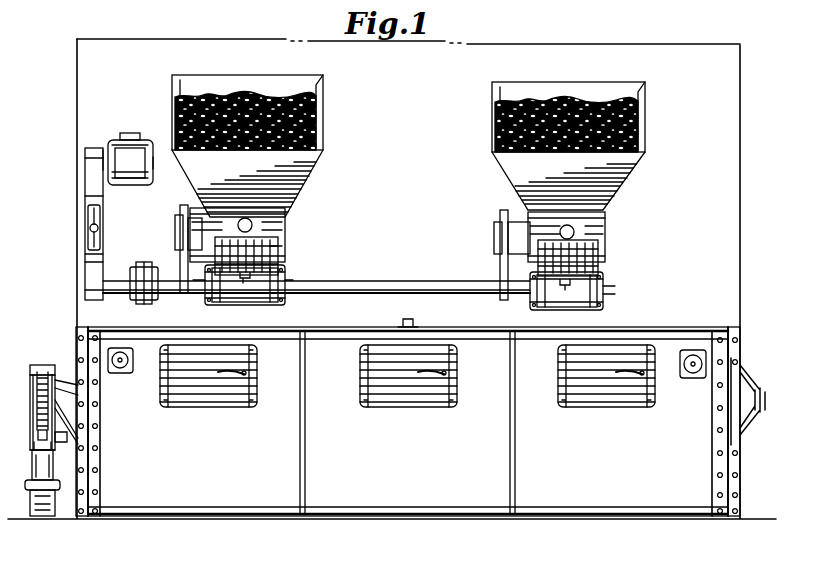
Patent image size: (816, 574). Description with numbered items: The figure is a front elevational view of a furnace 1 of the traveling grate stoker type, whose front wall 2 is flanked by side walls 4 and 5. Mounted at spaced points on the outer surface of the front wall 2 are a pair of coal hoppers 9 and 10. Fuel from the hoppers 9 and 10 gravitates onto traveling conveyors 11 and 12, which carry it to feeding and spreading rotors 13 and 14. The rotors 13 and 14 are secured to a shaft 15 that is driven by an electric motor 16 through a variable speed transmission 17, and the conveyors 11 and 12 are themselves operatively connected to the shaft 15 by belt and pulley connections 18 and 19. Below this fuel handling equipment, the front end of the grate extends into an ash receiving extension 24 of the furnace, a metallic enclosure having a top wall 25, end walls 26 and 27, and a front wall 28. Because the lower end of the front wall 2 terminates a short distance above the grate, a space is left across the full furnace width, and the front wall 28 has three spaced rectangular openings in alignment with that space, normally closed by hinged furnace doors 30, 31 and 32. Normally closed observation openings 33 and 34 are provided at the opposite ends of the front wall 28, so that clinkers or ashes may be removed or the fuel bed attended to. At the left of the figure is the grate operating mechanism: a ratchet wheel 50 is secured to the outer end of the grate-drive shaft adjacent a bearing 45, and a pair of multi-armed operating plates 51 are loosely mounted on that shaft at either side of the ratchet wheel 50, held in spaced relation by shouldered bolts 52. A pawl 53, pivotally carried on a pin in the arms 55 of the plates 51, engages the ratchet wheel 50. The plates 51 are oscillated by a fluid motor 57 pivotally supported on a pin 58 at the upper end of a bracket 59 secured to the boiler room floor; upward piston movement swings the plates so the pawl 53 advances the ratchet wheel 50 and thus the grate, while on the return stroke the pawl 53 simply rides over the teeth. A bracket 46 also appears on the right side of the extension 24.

The furnace 1 is at (77, 54).
The front wall 2 is at (379, 182).
The side wall 4 is at (85, 268).
The side wall 5 is at (742, 207).
The coal hopper 9 is at (320, 128).
The coal hopper 10 is at (642, 134).
The traveling conveyor 11 is at (287, 240).
The traveling conveyor 12 is at (607, 236).
The feeding and spreading rotor 13 is at (246, 296).
The feeding and spreading rotor 14 is at (551, 305).
The shaft 15 is at (349, 283).
The electric motor 16 is at (113, 140).
The variable speed transmission 17 is at (101, 226).
The belt and pulley connection 18 is at (180, 247).
The belt and pulley connection 19 is at (500, 256).
The ash receiving extension 24 is at (735, 467).
The top wall 25 is at (650, 330).
The end wall 26 is at (78, 337).
The end wall 27 is at (738, 350).
The front wall 28 is at (407, 422).
The hinged furnace door 30 is at (200, 403).
The hinged furnace door 31 is at (436, 406).
The hinged furnace door 32 is at (601, 407).
The observation opening 33 is at (123, 373).
The observation opening 34 is at (692, 380).
The bearing 45 is at (71, 380).
The bracket 46 is at (748, 392).
The ratchet wheel 50 is at (32, 406).
The multi-armed operating plate 51 is at (30, 385).
The shouldered bolt 52 is at (38, 365).
The pawl 53 is at (32, 450).
The arm 55 is at (32, 428).
The fluid motor 57 is at (34, 470).
The pin 58 is at (26, 484).
The bracket 59 is at (48, 518).